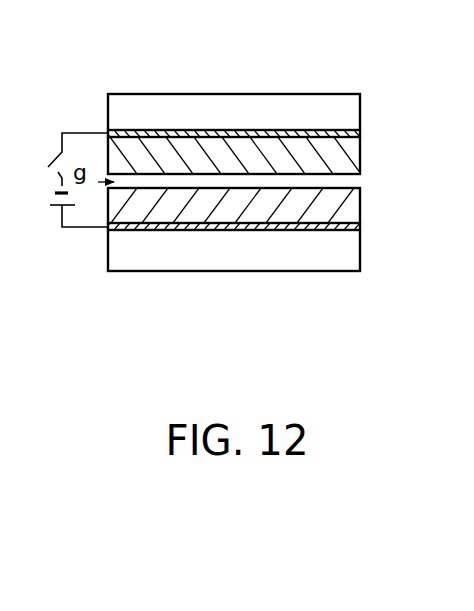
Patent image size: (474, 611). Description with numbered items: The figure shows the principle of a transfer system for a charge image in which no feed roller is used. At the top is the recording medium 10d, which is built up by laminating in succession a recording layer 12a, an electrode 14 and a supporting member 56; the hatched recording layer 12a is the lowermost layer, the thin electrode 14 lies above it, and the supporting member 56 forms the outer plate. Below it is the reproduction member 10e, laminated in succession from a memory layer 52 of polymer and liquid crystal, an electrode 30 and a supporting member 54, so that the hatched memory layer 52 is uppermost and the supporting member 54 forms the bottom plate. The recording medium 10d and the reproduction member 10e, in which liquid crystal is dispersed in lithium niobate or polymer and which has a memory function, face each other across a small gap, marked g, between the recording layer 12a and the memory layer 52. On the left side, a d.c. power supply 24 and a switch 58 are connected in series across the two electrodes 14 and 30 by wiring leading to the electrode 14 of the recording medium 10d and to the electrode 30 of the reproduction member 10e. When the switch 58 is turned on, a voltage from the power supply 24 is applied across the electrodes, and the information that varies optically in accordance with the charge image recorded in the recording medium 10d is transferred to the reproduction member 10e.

The recording medium 10d is at (227, 92).
The supporting member 56 is at (278, 98).
The electrode 14 is at (347, 132).
The recording layer 12a is at (350, 150).
The reproduction member 10e is at (160, 274).
The memory layer 52 is at (353, 201).
The electrode 30 is at (360, 229).
The supporting member 54 is at (335, 262).
The switch 58 is at (50, 157).
The d.c. power supply 24 is at (55, 215).